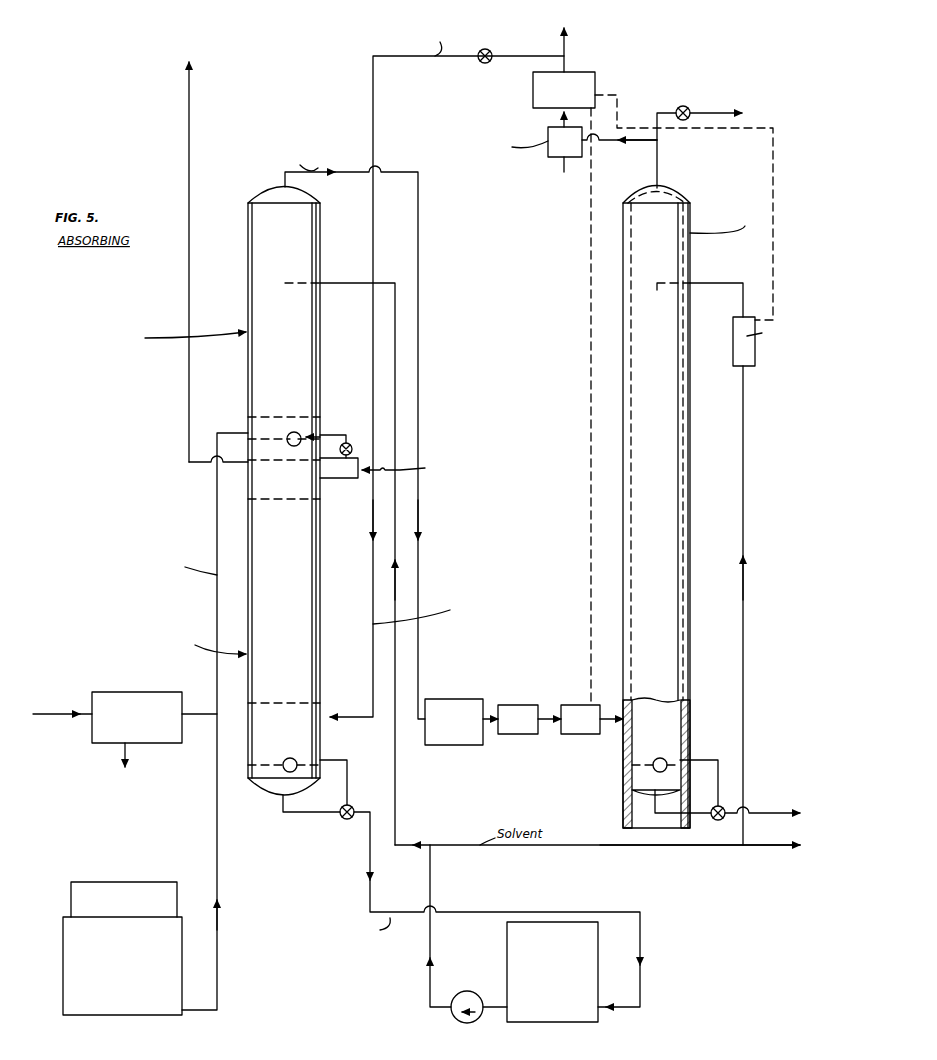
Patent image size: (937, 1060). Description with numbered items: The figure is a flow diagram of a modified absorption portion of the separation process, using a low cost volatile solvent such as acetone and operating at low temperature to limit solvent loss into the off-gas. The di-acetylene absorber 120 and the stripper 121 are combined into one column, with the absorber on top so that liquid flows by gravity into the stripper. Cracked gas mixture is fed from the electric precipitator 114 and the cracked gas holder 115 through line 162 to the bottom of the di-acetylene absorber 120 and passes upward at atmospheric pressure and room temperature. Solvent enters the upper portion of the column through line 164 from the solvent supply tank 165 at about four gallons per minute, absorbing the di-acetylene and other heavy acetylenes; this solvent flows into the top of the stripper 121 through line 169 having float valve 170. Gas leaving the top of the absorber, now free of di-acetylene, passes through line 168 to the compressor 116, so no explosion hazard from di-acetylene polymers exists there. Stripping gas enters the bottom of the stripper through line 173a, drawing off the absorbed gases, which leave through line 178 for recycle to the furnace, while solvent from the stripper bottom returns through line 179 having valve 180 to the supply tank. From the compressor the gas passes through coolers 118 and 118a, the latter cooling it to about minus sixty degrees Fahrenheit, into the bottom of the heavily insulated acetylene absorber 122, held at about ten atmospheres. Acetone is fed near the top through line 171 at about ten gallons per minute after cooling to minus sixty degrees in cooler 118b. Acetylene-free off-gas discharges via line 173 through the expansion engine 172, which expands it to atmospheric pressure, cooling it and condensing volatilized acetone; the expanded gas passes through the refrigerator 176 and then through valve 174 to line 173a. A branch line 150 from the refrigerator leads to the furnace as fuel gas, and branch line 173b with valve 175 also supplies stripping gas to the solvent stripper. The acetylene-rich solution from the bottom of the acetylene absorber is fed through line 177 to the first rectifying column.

The electric precipitator 114 is at (162, 692).
The cracked gas holder 115 is at (188, 874).
The compressor 116 is at (478, 699).
The cooler 118 is at (523, 705).
The cooler 118a is at (585, 734).
The cooler 118b is at (748, 366).
The di-acetylene absorber 120 is at (248, 398).
The stripper 121 is at (320, 668).
The acetylene absorber 122 is at (670, 258).
The branch line 150 is at (570, 50).
The line 162 is at (217, 620).
The line 164 is at (350, 292).
The solvent supply tank 165 is at (538, 1024).
The line 168 is at (418, 396).
The line 169 is at (335, 480).
The float valve 170 is at (352, 444).
The line 171 is at (743, 538).
The expansion engine 172 is at (548, 160).
The line 173 is at (657, 165).
The line 173a is at (350, 728).
The line 173b is at (712, 110).
The valve 174 is at (487, 49).
The valve 175 is at (683, 106).
The refrigerator 176 is at (533, 100).
The line 177 is at (777, 812).
The line 178 is at (189, 92).
The line 179 is at (305, 816).
The valve 180 is at (343, 819).